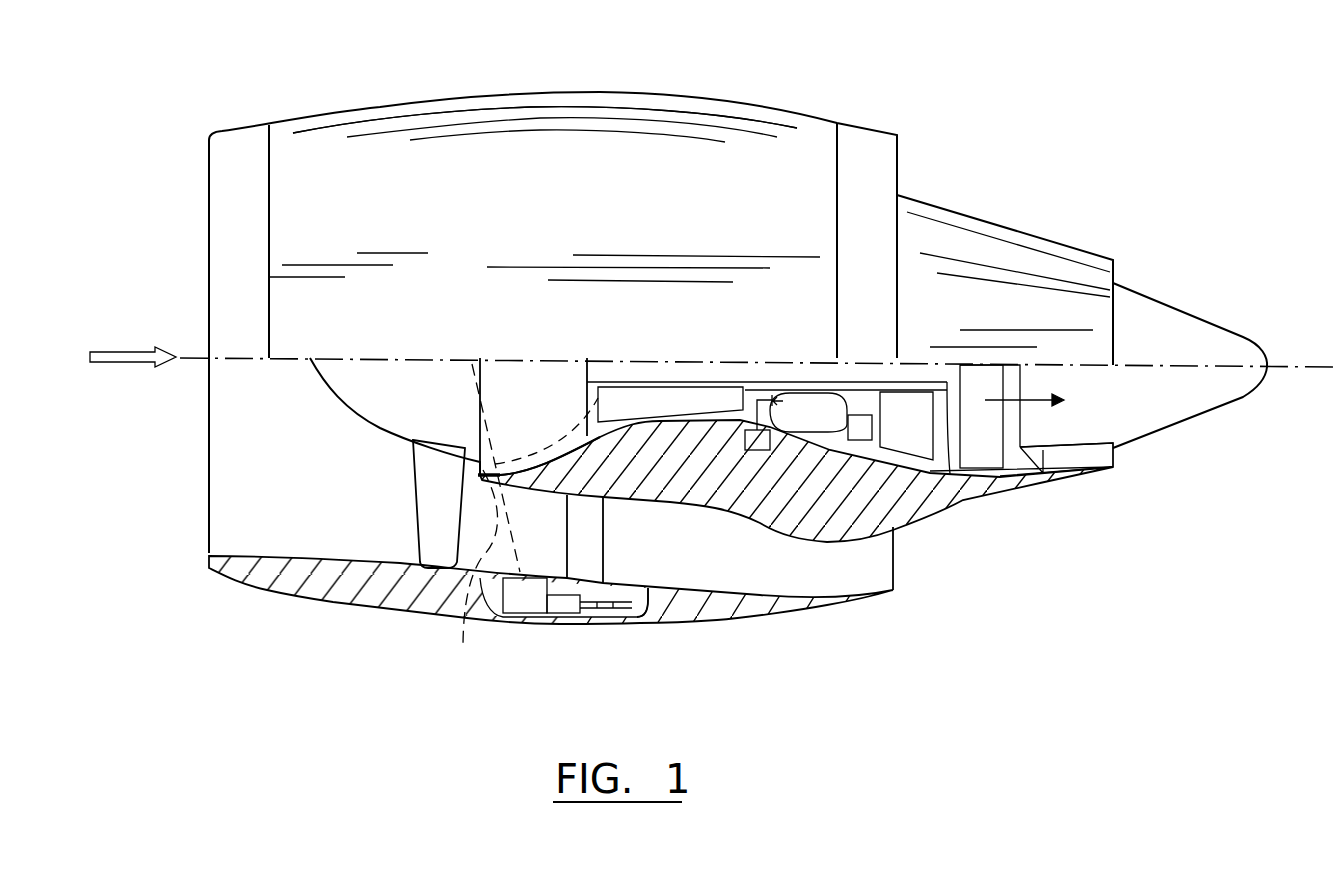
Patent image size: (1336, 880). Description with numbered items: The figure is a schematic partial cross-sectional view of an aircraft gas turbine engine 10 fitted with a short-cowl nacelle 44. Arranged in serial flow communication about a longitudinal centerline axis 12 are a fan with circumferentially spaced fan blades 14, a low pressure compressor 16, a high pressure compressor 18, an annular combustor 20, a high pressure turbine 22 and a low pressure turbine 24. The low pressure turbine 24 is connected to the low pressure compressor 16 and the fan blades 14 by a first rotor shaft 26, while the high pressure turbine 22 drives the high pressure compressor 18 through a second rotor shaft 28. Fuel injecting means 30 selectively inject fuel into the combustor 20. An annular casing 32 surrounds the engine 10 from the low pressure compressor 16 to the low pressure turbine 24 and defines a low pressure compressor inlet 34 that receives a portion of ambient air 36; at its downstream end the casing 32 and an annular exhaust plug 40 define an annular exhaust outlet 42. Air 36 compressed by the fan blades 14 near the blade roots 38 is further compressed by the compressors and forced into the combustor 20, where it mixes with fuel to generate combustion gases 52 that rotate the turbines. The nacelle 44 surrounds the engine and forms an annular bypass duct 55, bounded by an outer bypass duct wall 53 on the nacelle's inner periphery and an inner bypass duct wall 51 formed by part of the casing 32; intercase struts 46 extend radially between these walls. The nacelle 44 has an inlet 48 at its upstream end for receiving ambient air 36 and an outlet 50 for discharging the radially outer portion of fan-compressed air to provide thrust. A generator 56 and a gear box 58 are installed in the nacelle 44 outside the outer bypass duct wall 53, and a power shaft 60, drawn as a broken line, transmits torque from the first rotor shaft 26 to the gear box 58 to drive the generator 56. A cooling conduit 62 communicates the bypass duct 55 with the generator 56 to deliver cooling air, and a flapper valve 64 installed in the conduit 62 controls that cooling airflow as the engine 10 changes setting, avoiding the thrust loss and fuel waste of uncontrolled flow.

The aircraft gas turbine engine 10 is at (868, 104).
The longitudinal centerline axis 12 is at (1272, 367).
The fan blades 14 is at (416, 500).
The low pressure compressor 16 is at (541, 413).
The high pressure compressor 18 is at (613, 400).
The annular combustor 20 is at (820, 421).
The high pressure turbine 22 is at (923, 436).
The low pressure turbine 24 is at (1001, 444).
The first rotor shaft 26 is at (948, 474).
The second rotor shaft 28 is at (745, 451).
The fuel injecting means 30 is at (758, 451).
The annular casing 32 is at (1028, 240).
The low pressure compressor inlet 34 is at (477, 476).
The ambient air 36 is at (140, 357).
The blade roots 38 is at (474, 364).
The annular exhaust plug 40 is at (1180, 418).
The annular exhaust outlet 42 is at (1113, 462).
The nacelle 44 is at (578, 93).
The intercase struts 46 is at (588, 558).
The inlet 48 is at (207, 301).
The outlet 50 is at (898, 170).
The inner bypass duct wall 51 is at (729, 512).
The combustion gases 52 is at (1053, 405).
The outer bypass duct wall 53 is at (709, 582).
The annular bypass duct 55 is at (863, 573).
The generator 56 is at (562, 605).
The gear box 58 is at (523, 600).
The power shaft 60 is at (468, 587).
The cooling conduit 62 is at (645, 606).
The flapper valve 64 is at (603, 613).